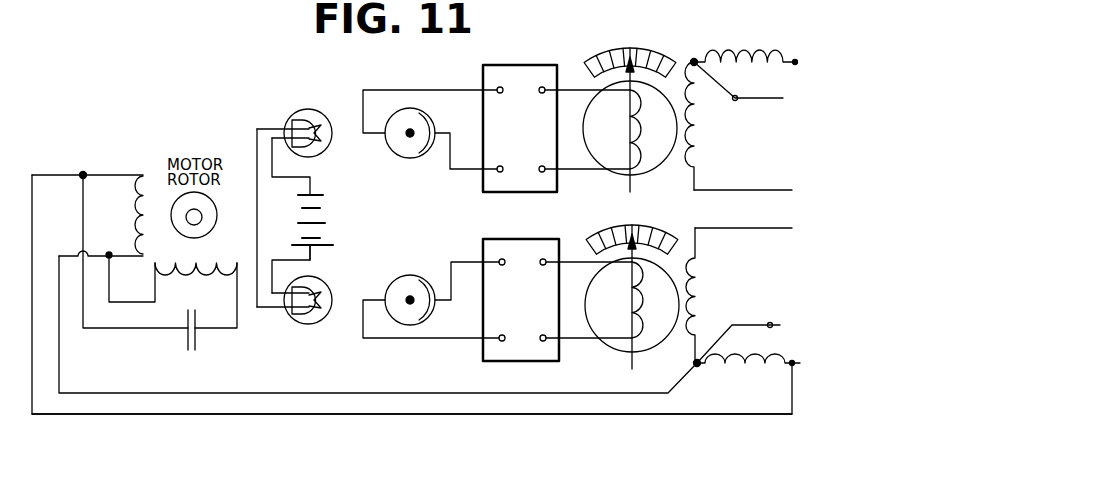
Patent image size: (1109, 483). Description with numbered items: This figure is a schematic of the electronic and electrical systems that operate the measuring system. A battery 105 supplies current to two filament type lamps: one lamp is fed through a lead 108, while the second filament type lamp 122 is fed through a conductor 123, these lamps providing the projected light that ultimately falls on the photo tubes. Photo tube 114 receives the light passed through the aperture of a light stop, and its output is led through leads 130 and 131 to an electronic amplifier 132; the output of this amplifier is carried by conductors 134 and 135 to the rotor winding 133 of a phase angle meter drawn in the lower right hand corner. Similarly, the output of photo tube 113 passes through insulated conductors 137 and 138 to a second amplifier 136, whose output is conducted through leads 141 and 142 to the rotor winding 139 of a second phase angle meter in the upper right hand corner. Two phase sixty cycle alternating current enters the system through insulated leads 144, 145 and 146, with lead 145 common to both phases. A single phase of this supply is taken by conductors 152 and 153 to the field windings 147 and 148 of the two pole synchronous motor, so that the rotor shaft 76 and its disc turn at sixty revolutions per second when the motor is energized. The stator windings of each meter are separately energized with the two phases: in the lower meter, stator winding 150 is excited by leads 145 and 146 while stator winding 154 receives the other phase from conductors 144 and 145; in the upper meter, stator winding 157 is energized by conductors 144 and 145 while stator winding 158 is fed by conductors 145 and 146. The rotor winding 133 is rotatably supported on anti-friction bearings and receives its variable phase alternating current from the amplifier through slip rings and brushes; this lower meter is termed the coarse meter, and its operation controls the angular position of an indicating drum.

The rotor shaft 76 is at (194, 225).
The battery 105 is at (317, 220).
The lead 108 is at (313, 182).
The photo tube 113 is at (430, 124).
The photo tube 114 is at (424, 272).
The filament type lamp 122 is at (312, 321).
The conductor 123 is at (312, 253).
The lead 130 is at (472, 250).
The lead 131 is at (443, 340).
The electronic amplifier 132 is at (515, 239).
The rotor winding 133 is at (640, 333).
The conductor 134 is at (598, 262).
The conductor 135 is at (572, 340).
The amplifier 136 is at (511, 182).
The insulated conductor 137 is at (475, 90).
The insulated conductor 138 is at (463, 171).
The rotor winding 139 is at (647, 160).
The lead 141 is at (593, 90).
The lead 142 is at (573, 171).
The insulated lead 144 is at (795, 60).
The insulated lead 145 is at (739, 98).
The insulated lead 146 is at (767, 228).
The field winding 147 is at (141, 215).
The field winding 148 is at (184, 275).
The stator winding 150 is at (699, 269).
The conductor 152 is at (404, 392).
The conductor 153 is at (434, 409).
The stator winding 154 is at (760, 373).
The stator winding 157 is at (748, 50).
The stator winding 158 is at (696, 137).